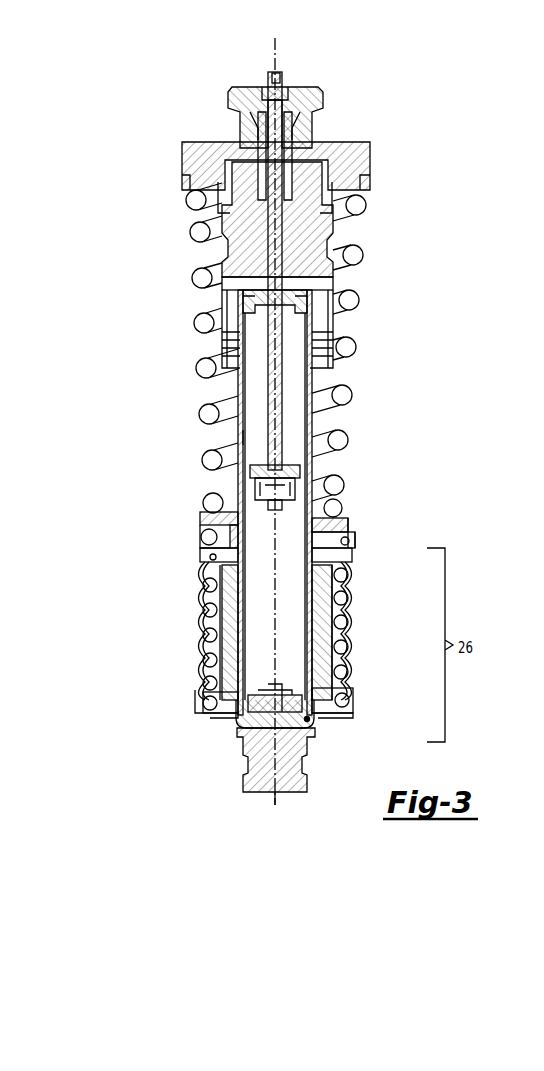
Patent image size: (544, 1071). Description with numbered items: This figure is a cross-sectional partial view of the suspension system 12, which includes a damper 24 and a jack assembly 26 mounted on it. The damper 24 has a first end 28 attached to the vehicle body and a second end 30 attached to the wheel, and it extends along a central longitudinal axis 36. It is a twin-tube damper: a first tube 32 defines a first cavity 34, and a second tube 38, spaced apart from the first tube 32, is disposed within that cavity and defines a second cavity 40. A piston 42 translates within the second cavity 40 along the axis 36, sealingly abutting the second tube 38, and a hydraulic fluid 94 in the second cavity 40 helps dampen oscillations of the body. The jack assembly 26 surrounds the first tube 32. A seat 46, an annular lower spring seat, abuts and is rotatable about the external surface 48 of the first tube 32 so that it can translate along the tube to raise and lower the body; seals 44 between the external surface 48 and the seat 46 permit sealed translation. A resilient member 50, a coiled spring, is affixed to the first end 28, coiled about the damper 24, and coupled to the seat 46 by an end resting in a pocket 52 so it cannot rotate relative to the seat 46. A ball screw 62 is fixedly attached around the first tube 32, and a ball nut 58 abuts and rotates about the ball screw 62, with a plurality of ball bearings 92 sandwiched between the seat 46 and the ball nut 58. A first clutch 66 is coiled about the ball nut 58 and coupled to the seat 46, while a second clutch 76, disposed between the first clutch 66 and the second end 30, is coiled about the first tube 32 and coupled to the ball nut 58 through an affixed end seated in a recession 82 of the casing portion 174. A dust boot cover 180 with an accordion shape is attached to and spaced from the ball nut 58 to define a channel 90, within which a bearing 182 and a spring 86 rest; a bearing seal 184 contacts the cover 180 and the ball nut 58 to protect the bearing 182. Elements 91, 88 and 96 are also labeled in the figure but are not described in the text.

The suspension system 12 is at (124, 112).
The first end 28 is at (168, 168).
The piston 42 is at (283, 177).
The resilient member 50 is at (364, 256).
The second cavity 40 is at (252, 342).
The fluid 94 is at (296, 385).
The second tube 38 is at (243, 383).
The external surface 48 is at (230, 437).
The seals 44 is at (313, 476).
The first clutch 66 is at (343, 500).
The ball bearings 92 is at (348, 524).
The seat 46 is at (358, 548).
The bearing 182 is at (348, 546).
The upper bellows ring 91 is at (353, 560).
The spring 86 is at (357, 604).
The dust boot cover 180 is at (360, 634).
The first tube 32 is at (333, 670).
The jack assembly 26 is at (300, 645).
The casing portion 174 is at (330, 696).
The channel 90 is at (346, 721).
The second clutch 76 is at (312, 716).
The first cavity 34 is at (308, 723).
The damper 24 is at (242, 743).
The central longitudinal axis 36 is at (273, 802).
The second end 30 is at (278, 651).
The lower seal 88 is at (207, 708).
The recession 82 is at (205, 703).
The ball screw 62 is at (233, 598).
The ball nut 58 is at (202, 582).
The bearing seal 184 is at (215, 553).
The O-ring 96 is at (205, 537).
The pocket 52 is at (202, 508).